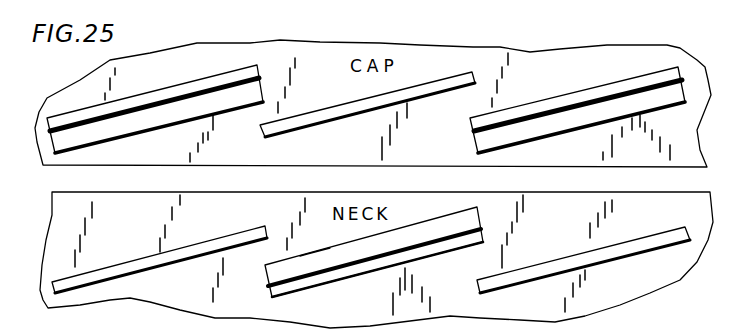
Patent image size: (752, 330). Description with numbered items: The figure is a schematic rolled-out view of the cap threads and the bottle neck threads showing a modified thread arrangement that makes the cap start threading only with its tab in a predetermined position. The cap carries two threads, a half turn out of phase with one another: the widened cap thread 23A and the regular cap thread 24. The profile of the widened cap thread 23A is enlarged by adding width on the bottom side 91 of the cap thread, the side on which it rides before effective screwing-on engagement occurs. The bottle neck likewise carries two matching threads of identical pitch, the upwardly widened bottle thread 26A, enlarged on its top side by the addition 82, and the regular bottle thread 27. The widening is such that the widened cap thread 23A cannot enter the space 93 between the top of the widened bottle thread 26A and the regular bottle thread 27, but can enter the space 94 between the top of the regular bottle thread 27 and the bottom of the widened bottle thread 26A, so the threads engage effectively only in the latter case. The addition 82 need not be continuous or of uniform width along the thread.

The widened cap thread 23A is at (120, 103).
The cap thread 24 is at (328, 112).
The bottom side of the cap thread 91 is at (140, 122).
The regular bottle thread 27 is at (127, 266).
The widened bottle thread 26A is at (344, 283).
The addition to the neck thread 82 is at (312, 263).
The space between top of widened bottle thread and regular bottle thread 93 is at (256, 270).
The space between top of regular bottle thread and bottom of widened bottle thread 94 is at (482, 277).